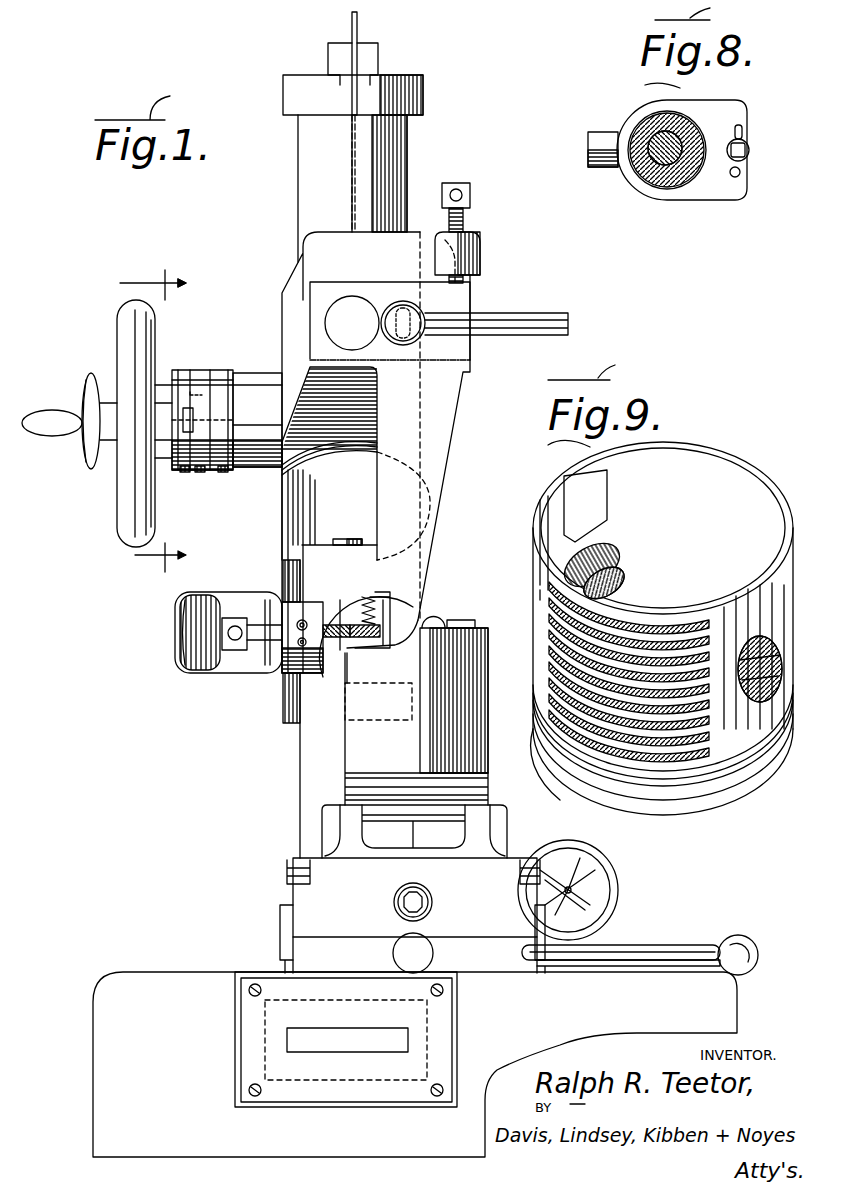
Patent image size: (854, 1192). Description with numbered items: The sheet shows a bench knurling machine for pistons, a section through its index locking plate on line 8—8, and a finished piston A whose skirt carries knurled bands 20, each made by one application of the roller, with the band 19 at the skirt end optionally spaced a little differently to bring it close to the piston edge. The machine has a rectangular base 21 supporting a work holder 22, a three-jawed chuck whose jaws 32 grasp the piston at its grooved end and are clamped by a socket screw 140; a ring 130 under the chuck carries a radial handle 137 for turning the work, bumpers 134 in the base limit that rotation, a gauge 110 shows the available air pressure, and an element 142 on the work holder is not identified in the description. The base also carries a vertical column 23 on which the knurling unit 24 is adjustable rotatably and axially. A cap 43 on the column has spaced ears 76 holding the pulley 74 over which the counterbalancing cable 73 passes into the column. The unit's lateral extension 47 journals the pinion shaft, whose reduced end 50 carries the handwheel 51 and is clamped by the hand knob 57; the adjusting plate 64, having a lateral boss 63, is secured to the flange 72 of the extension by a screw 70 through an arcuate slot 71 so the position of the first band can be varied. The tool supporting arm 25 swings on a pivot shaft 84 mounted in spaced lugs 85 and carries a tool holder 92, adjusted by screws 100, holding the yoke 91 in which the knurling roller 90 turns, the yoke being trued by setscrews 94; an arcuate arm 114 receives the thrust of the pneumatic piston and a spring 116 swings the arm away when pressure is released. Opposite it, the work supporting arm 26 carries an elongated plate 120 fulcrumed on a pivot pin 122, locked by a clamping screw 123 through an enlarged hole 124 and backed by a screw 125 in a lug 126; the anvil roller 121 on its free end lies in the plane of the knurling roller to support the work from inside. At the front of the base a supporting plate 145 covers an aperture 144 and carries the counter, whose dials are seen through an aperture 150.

In FIG. 1, the pulley 74 is at (358, 26).
In FIG. 1, the spaced ears 76 is at (330, 52).
In FIG. 1, the cap 43 is at (421, 95).
In FIG. 1, the flexible cable 73 is at (350, 152).
In FIG. 1, the backing screw 125 is at (470, 216).
In FIG. 1, the lug 126 is at (480, 246).
In FIG. 1, the work supporting arm 26 is at (280, 320).
In FIG. 1, the elongated hole 124 is at (400, 278).
In FIG. 1, the pivot pin 122 is at (345, 312).
In FIG. 1, the clamping screw 123 is at (392, 310).
In FIG. 1, the elongated plate 120 is at (440, 432).
In FIG. 1, the section line 8— 8 is at (153, 425).
In FIG. 1, the hand knob 57 is at (90, 462).
In FIG. 1, the handwheel 51 is at (122, 522).
In FIG. 1, the arcuate slot 71 is at (203, 372).
In FIG. 8, the arcuate slot 71 is at (742, 172).
In FIG. 1, the screw 70 is at (195, 420).
In FIG. 8, the screw 70 is at (748, 150).
In FIG. 1, the lateral extension 47 is at (258, 458).
In FIG. 1, the adjusting plate 64 is at (205, 472).
In FIG. 8, the adjusting plate 64 is at (772, 107).
In FIG. 1, the flange 72 is at (223, 472).
In FIG. 1, the knurling unit 24 is at (278, 508).
In FIG. 1, the knurling roller 90 is at (290, 522).
In FIG. 1, the pivot shaft 84 is at (350, 532).
In FIG. 1, the spaced lugs 85 is at (300, 562).
In FIG. 1, the yoke 91 is at (276, 600).
In FIG. 1, the setscrews 94 is at (303, 638).
In FIG. 1, the anvil roller 121 is at (385, 630).
In FIG. 1, the spring 116 is at (445, 618).
In FIG. 1, the adjusting screws 100 is at (470, 625).
In FIG. 1, the arcuately shaped arm 114 is at (180, 626).
In FIG. 1, the tool supporting arm 25 is at (255, 676).
In FIG. 1, the tool holder 92 is at (290, 662).
In FIG. 1, the column 23 is at (300, 770).
In FIG. 1, the jaws 32 is at (340, 820).
In FIG. 9, the jaws 32 is at (545, 774).
In FIG. 1, the work holder 22 is at (290, 898).
In FIG. 1, the socket screw 140 is at (396, 900).
In FIG. 1, the knob 142 is at (433, 953).
In FIG. 1, the gauge 110 is at (618, 890).
In FIG. 1, the bumpers 134 is at (590, 912).
In FIG. 1, the handle 137 is at (695, 946).
In FIG. 1, the base 21 is at (130, 990).
In FIG. 1, the ring 130 is at (513, 972).
In FIG. 1, the supporting plate 145 is at (250, 1030).
In FIG. 1, the aperture 150 is at (372, 1052).
In FIG. 1, the aperture 144 is at (325, 1078).
In FIG. 8, the reduced outer end 50 is at (665, 147).
In FIG. 8, the lateral boss 63 is at (603, 162).
In FIG. 9, the piston A is at (693, 440).
In FIG. 9, the knurled bands 20 is at (722, 690).
In FIG. 9, the end knurled band 19 is at (540, 598).